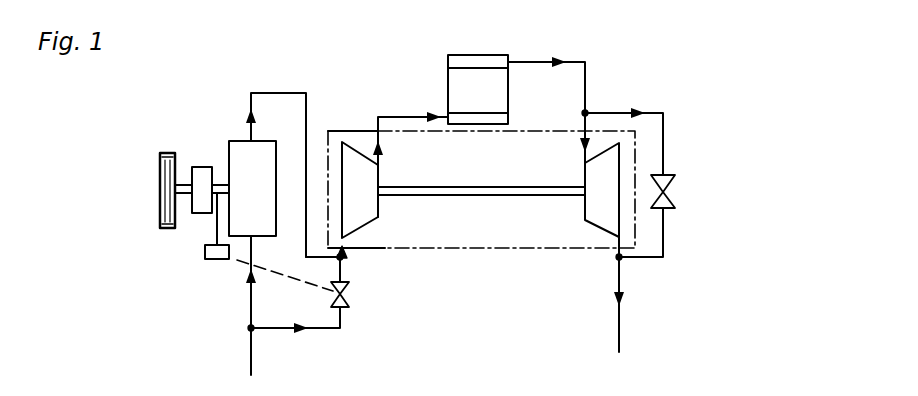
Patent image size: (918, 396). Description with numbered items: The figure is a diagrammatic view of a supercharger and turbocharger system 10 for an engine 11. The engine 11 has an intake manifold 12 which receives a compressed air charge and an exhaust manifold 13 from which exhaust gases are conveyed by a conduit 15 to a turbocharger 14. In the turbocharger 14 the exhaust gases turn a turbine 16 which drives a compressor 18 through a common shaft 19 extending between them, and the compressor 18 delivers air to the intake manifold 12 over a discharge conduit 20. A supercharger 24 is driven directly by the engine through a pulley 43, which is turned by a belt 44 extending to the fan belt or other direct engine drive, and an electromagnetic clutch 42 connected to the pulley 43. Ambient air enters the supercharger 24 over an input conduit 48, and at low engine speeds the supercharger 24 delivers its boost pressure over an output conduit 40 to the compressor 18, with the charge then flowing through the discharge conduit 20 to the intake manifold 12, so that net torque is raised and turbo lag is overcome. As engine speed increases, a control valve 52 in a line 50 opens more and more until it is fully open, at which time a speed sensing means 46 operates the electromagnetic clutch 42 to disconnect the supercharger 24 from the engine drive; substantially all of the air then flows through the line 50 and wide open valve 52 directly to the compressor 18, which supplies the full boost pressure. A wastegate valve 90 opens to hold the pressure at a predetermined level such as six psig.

The supercharger and turbocharger system 10 is at (530, 48).
The engine 11 is at (447, 68).
The intake manifold 12 is at (483, 119).
The exhaust manifold 13 is at (478, 61).
The turbocharger 14 is at (543, 254).
The conduit 15 is at (585, 78).
The turbine 16 is at (602, 202).
The compressor 18 is at (367, 208).
The common shaft 19 is at (457, 197).
The discharge conduit 20 is at (403, 116).
The supercharger 24 is at (240, 228).
The output conduit 40 is at (303, 66).
The electromagnetic clutch 42 is at (201, 166).
The pulley 43 is at (160, 190).
The belt 44 is at (163, 229).
The speed sensing means 46 is at (205, 259).
The input conduit 48 is at (251, 360).
The line 50 is at (328, 330).
The control valve 52 is at (348, 292).
The wastegate valve 90 is at (679, 184).